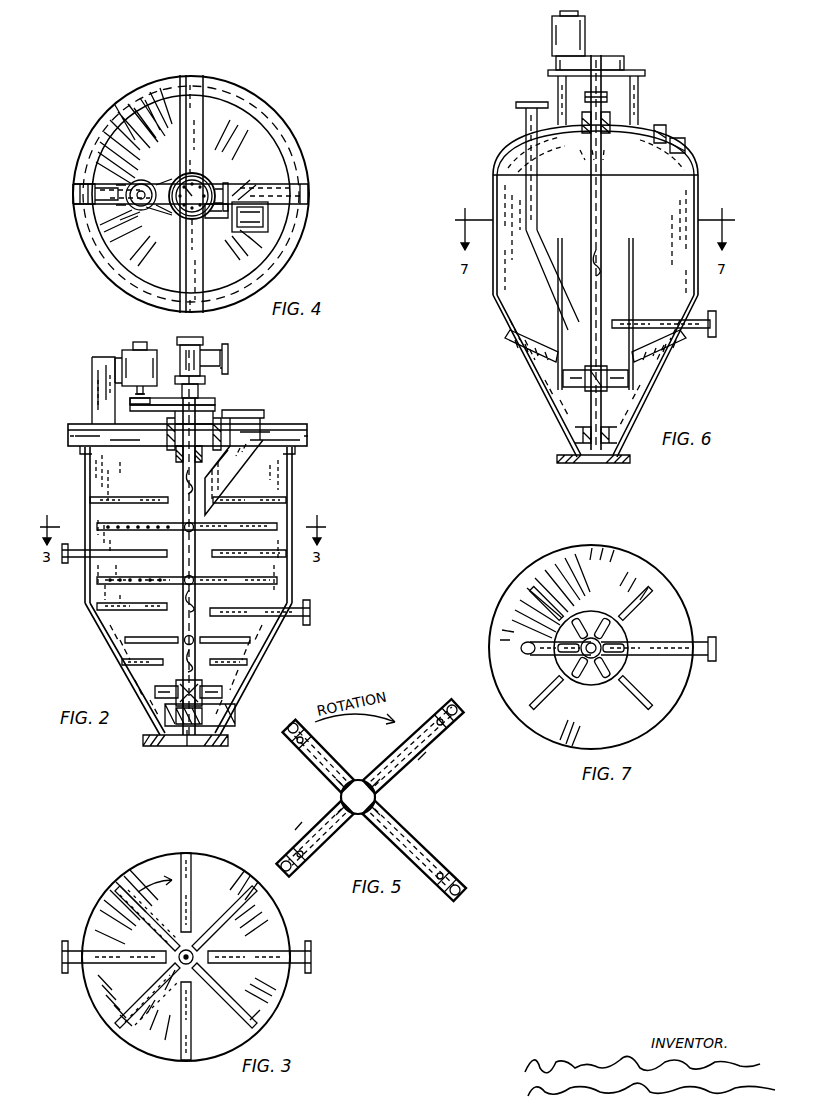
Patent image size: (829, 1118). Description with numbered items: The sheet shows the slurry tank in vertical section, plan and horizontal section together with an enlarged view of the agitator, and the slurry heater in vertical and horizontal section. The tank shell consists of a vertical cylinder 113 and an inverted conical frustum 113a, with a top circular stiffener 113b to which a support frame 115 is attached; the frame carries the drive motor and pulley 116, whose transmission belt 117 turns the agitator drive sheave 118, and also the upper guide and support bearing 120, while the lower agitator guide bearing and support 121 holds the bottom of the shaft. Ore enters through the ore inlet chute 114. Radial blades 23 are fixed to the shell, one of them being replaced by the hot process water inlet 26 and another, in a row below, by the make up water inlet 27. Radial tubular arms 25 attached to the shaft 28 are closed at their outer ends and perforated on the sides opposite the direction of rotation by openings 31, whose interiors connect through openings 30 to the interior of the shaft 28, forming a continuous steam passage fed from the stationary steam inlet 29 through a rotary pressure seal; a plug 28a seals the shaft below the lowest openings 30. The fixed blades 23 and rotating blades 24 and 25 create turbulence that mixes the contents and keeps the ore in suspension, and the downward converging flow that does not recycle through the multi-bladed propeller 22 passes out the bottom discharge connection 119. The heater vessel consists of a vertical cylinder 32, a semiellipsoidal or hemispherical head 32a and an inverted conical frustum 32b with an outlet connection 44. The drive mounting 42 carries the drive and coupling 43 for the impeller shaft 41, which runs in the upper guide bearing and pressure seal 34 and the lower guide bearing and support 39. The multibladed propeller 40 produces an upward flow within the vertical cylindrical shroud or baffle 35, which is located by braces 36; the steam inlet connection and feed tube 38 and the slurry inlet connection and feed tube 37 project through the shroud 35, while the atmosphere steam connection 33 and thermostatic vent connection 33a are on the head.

In FIG. 2, the multi-bladed propeller 22 is at (162, 686).
In FIG. 2, the radial blades 23 is at (118, 498).
In FIG. 3, the radial blades 23 is at (191, 886).
In FIG. 2, the rotating blades 24 is at (142, 634).
In FIG. 2, the radial tubular arms 25 is at (230, 522).
In FIG. 3, the radial tubular arms 25 is at (232, 897).
In FIG. 5, the radial tubular arms 25 is at (378, 746).
In FIG. 2, the hot process water inlet 26 is at (115, 542).
In FIG. 3, the hot process water inlet 26 is at (62, 968).
In FIG. 2, the make up water inlet 27 is at (266, 600).
In FIG. 3, the make up water inlet 27 is at (306, 942).
In FIG. 2, the shaft 28 is at (197, 536).
In FIG. 3, the shaft 28 is at (200, 946).
In FIG. 5, the shaft 28 is at (340, 795).
In FIG. 2, the plug 28a is at (196, 598).
In FIG. 5, the plug 28a is at (359, 796).
In FIG. 2, the stationary steam inlet 29 is at (222, 352).
In FIG. 5, the openings 30 is at (388, 783).
In FIG. 2, the openings 31 is at (142, 516).
In FIG. 3, the openings 31 is at (214, 918).
In FIG. 5, the openings 31 is at (420, 716).
In FIG. 6, the vertical cylinder 32 is at (704, 284).
In FIG. 7, the vertical cylinder 32 is at (684, 596).
In FIG. 6, the semiellipsoidal or hemispherical head 32a is at (696, 160).
In FIG. 6, the inverted conical frustrum 32b is at (652, 386).
In FIG. 7, the inverted conical frustrum 32b is at (608, 581).
In FIG. 6, the atmosphere steam connection 33 is at (670, 124).
In FIG. 6, the thermostatic vent connection 33a is at (690, 140).
In FIG. 6, the upper guide bearing and pressure seal 34 is at (612, 110).
In FIG. 6, the vertical cylindrical shroud or baffle 35 is at (634, 264).
In FIG. 7, the vertical cylindrical shroud or baffle 35 is at (594, 702).
In FIG. 6, the braces 36 is at (548, 343).
In FIG. 7, the braces 36 is at (546, 600).
In FIG. 6, the slurry inlet connection and feed tube 37 is at (536, 100).
In FIG. 7, the slurry inlet connection and feed tube 37 is at (540, 640).
In FIG. 6, the steam inlet connection and feed tube 38 is at (624, 312).
In FIG. 7, the steam inlet connection and feed tube 38 is at (636, 642).
In FIG. 6, the lower guide bearing and support 39 is at (608, 428).
In FIG. 6, the multibladed propeller 40 is at (585, 366).
In FIG. 7, the multibladed propeller 40 is at (598, 640).
In FIG. 6, the impeller shaft 41 is at (603, 200).
In FIG. 6, the drive mounting 42 is at (650, 66).
In FIG. 6, the drive and coupling 43 is at (622, 52).
In FIG. 6, the outlet connection 44 is at (628, 476).
In FIG. 4, the vertical cylinder 113 is at (268, 122).
In FIG. 2, the vertical cylinder 113 is at (295, 486).
In FIG. 3, the vertical cylinder 113 is at (96, 988).
In FIG. 2, the inverted conical frustrum 113a is at (274, 642).
In FIG. 4, the top circular stiffener 113b is at (305, 147).
In FIG. 2, the top circular stiffener 113b is at (309, 450).
In FIG. 4, the ore inlet chute 114 is at (250, 236).
In FIG. 2, the ore inlet chute 114 is at (250, 398).
In FIG. 4, the support frame 115 is at (186, 116).
In FIG. 2, the support frame 115 is at (292, 412).
In FIG. 4, the drive motor and pulley 116 is at (142, 178).
In FIG. 2, the drive motor and pulley 116 is at (136, 350).
In FIG. 4, the transmission belt 117 is at (170, 224).
In FIG. 2, the transmission belt 117 is at (140, 412).
In FIG. 4, the agitator drive sheave 118 is at (178, 168).
In FIG. 2, the agitator drive sheave 118 is at (222, 404).
In FIG. 2, the bottom discharge connection 119 is at (216, 757).
In FIG. 2, the upper guide and support bearing 120 is at (180, 456).
In FIG. 2, the lower agitator guide bearing and support 121 is at (204, 712).